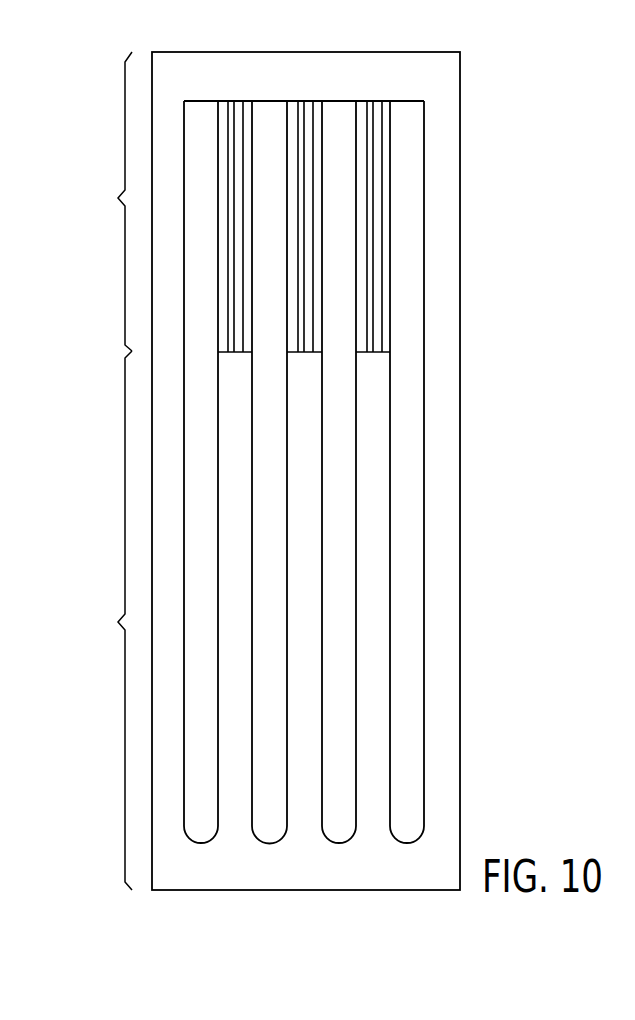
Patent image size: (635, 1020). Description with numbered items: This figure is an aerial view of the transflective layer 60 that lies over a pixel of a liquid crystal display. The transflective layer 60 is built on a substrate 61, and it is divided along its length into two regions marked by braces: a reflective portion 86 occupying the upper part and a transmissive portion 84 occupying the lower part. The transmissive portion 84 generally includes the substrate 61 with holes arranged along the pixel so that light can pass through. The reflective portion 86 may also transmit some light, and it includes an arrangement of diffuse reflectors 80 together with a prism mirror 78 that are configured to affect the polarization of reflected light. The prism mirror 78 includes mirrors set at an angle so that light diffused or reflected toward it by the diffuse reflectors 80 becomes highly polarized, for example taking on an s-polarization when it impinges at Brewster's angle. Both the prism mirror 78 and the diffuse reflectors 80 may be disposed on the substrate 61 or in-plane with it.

The transflective layer 60 is at (321, 454).
The substrate 61 is at (366, 52).
The prism mirror 78 is at (375, 101).
The diffuse reflectors 80 is at (343, 456).
The transmissive portion 84 is at (119, 622).
The reflective portion 86 is at (119, 198).